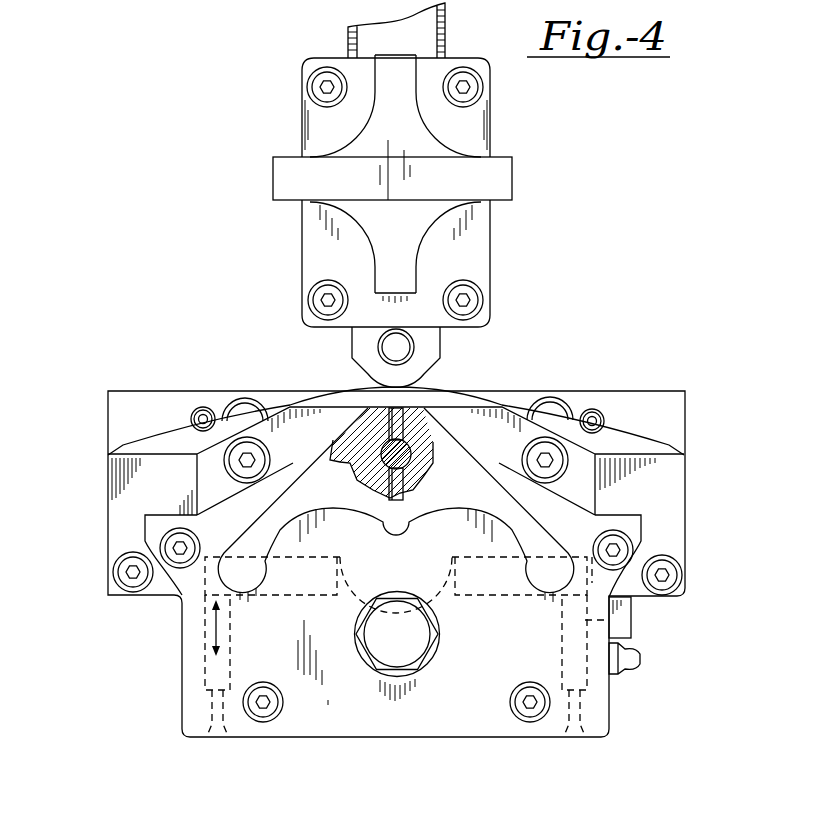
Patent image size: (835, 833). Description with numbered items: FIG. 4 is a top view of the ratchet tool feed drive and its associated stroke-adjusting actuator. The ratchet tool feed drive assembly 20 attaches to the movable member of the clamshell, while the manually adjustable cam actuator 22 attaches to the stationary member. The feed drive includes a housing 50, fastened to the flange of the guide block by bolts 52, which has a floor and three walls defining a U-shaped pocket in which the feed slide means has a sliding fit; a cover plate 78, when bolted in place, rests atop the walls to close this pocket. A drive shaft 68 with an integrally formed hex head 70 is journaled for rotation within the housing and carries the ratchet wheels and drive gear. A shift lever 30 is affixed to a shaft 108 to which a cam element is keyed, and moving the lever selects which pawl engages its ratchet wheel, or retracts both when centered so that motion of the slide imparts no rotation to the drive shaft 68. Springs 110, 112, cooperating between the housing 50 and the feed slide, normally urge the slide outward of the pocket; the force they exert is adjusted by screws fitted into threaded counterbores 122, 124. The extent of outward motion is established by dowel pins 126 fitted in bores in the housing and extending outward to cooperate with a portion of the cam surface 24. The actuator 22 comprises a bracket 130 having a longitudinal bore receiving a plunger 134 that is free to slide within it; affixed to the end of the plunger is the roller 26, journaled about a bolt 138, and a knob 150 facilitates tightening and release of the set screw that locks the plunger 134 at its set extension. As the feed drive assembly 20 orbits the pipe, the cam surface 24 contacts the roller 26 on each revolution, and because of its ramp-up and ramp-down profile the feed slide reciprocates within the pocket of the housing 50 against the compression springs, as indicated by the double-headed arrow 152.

The ratchet tool feed drive assembly 20 is at (409, 524).
The manually adjustable cam actuator 22 is at (389, 195).
The cam surface 24 is at (516, 400).
The roller 26 is at (370, 380).
The shift lever 30 is at (552, 568).
The housing 50 is at (104, 383).
The bolts 52 is at (246, 397).
The drive shaft 68 is at (440, 636).
The hex head 70 is at (418, 632).
The cover plate 78 is at (595, 707).
The shaft 108 is at (372, 424).
The spring 110 is at (210, 640).
The spring 112 is at (633, 627).
The threaded counterbore 122 is at (215, 695).
The threaded counterbore 124 is at (615, 692).
The dowel pins 126 is at (201, 405).
The bracket 130 is at (480, 243).
The plunger 134 is at (360, 40).
The shaft (bolt) 138 is at (417, 343).
The knob 150 is at (513, 157).
The double-headed arrow 152 is at (207, 636).